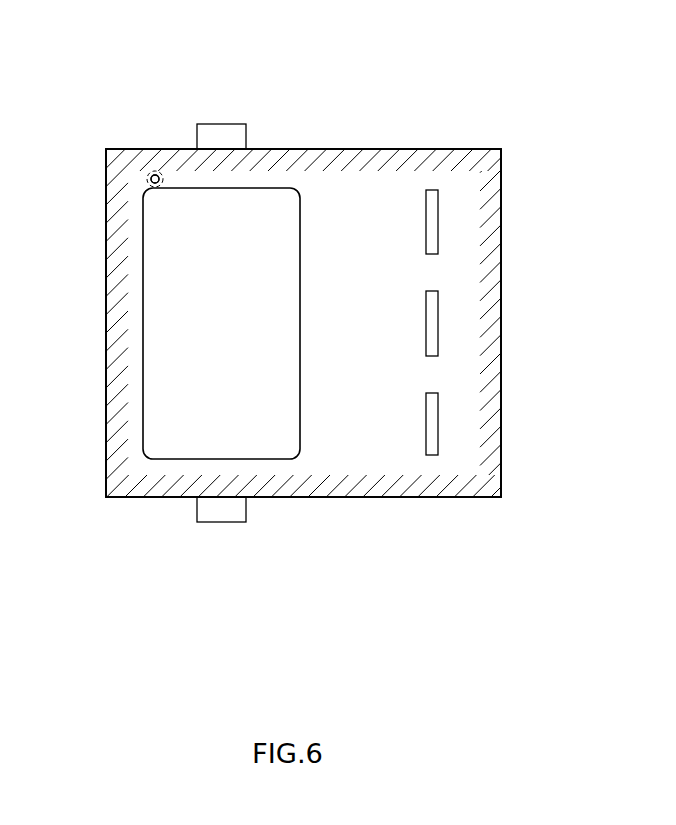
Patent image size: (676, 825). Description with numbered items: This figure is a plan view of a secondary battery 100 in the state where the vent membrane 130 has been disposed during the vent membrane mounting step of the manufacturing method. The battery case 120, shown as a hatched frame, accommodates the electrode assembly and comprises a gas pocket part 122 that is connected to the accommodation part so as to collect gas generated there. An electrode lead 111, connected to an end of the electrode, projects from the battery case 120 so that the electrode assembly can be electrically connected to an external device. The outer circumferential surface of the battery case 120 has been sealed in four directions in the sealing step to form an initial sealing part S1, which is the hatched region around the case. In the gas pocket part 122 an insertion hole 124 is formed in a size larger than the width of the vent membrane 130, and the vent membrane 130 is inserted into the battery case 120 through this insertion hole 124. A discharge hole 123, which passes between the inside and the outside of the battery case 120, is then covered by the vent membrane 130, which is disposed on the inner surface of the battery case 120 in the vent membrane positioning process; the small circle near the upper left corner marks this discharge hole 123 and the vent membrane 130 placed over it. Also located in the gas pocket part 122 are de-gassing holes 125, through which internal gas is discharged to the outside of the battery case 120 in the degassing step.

The secondary battery 100 is at (402, 35).
The battery case 120 is at (470, 136).
The electrode lead 111 is at (221, 517).
The gas pocket part 122 is at (398, 450).
The discharge hole 123 is at (147, 181).
The insertion hole 124 is at (438, 221).
The de-gassing hole 125 is at (438, 323).
The vent membrane 130 is at (152, 170).
The initial sealing part S1 is at (133, 490).